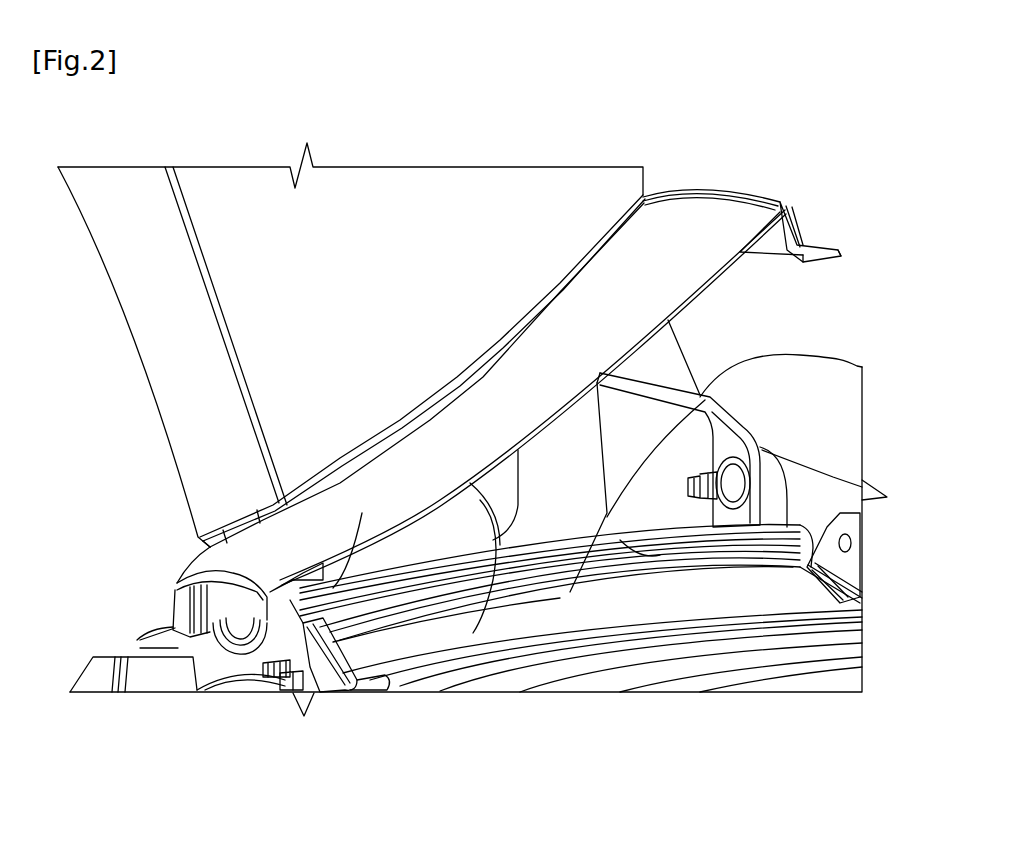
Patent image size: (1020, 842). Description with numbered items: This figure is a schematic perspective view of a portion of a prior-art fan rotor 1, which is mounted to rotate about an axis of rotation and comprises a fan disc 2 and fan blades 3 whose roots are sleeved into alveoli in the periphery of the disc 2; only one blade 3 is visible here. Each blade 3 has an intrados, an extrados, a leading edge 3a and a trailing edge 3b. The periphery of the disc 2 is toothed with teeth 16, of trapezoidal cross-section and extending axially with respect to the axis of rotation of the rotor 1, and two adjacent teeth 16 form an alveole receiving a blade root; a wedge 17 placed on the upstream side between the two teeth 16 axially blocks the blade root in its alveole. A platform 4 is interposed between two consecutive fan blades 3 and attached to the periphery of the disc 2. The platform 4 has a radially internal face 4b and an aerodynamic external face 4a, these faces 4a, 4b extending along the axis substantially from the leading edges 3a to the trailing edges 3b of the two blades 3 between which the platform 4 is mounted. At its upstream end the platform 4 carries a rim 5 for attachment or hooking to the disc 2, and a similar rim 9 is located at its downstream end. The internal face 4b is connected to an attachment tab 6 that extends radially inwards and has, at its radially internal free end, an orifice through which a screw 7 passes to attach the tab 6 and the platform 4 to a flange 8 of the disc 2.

The fan rotor 1 is at (88, 653).
The fan disc 2 is at (792, 652).
The fan blade 3 is at (447, 188).
The leading edge 3a is at (103, 265).
The trailing edge 3b is at (643, 177).
The platform 4 is at (369, 462).
The aerodynamic external face 4a is at (290, 625).
The internal face 4b is at (500, 567).
The rim 5 is at (250, 612).
The attachment tab 6 is at (578, 575).
The screw 7 is at (703, 508).
The flange 8 is at (772, 494).
The rim 9 is at (802, 231).
The teeth 16 is at (470, 578).
The wedge 17 is at (245, 640).